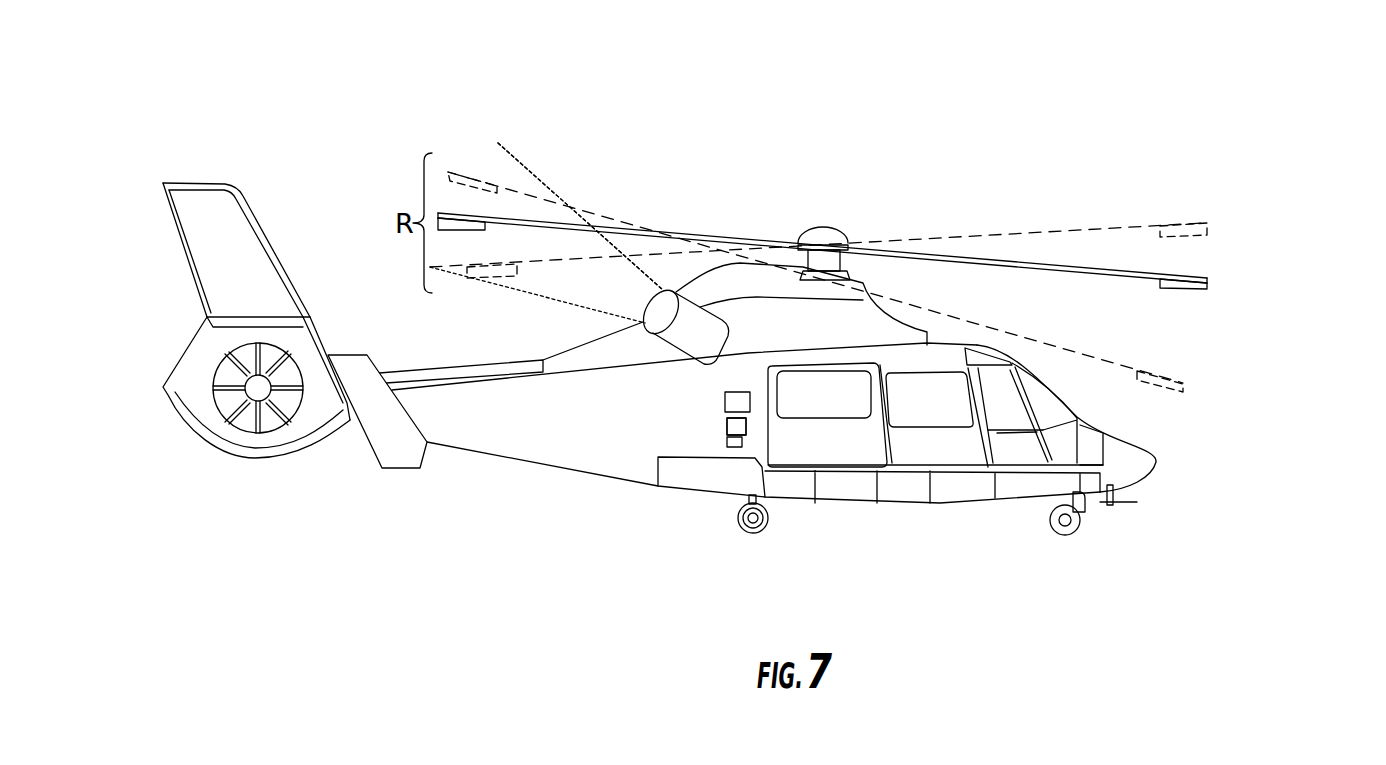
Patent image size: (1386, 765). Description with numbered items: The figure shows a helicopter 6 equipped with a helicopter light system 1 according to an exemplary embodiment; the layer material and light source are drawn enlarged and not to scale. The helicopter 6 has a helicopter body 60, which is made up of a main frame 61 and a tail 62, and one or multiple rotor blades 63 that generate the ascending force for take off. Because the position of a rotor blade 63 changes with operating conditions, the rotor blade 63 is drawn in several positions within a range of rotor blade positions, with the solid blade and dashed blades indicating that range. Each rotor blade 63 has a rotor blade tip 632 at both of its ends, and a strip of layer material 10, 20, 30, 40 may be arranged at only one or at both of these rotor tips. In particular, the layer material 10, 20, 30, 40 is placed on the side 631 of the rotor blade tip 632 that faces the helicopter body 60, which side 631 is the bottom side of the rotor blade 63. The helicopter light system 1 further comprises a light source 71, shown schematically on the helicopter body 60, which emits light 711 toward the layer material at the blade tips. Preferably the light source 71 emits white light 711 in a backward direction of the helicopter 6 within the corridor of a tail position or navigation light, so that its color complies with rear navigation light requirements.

The helicopter light system 1 is at (568, 101).
The helicopter 6 is at (1102, 562).
The layer material 10 is at (1180, 238).
The layer material 20 is at (1200, 285).
The layer material 30 is at (1167, 385).
The layer material 40 is at (911, 340).
The helicopter body 60 is at (905, 505).
The main frame 61 is at (750, 443).
The tail 62 is at (453, 410).
The rotor blade 63 is at (713, 237).
The side of rotor blade tip 631 is at (1040, 267).
The rotor blade tip 632 is at (1167, 268).
The light source 71 is at (693, 335).
The light 711 is at (620, 287).